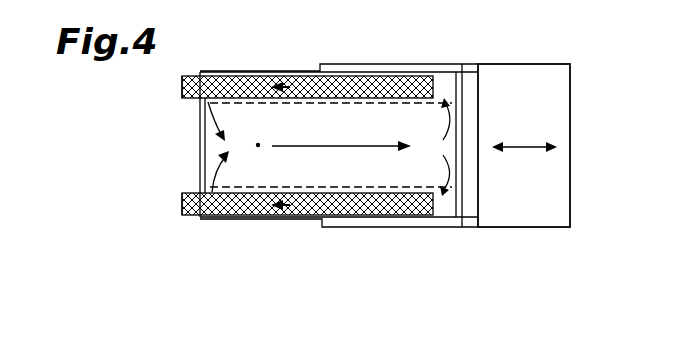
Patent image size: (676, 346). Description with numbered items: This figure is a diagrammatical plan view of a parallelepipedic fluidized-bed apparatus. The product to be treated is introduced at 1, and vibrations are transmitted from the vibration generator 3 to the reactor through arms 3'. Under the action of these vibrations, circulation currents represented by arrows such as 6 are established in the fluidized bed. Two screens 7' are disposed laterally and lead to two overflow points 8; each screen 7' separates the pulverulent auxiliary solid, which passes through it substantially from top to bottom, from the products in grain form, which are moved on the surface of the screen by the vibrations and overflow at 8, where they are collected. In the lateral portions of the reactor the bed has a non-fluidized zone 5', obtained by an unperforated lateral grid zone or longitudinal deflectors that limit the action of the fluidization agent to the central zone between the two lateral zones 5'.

The product introduction point 1 is at (258, 131).
The vibration generator 3 is at (540, 145).
The arms 3' is at (339, 144).
The non-fluidized zone 5' is at (452, 84).
The circulation current arrows 6 is at (352, 157).
The screens 7' is at (307, 150).
The overflow points 8 is at (169, 147).